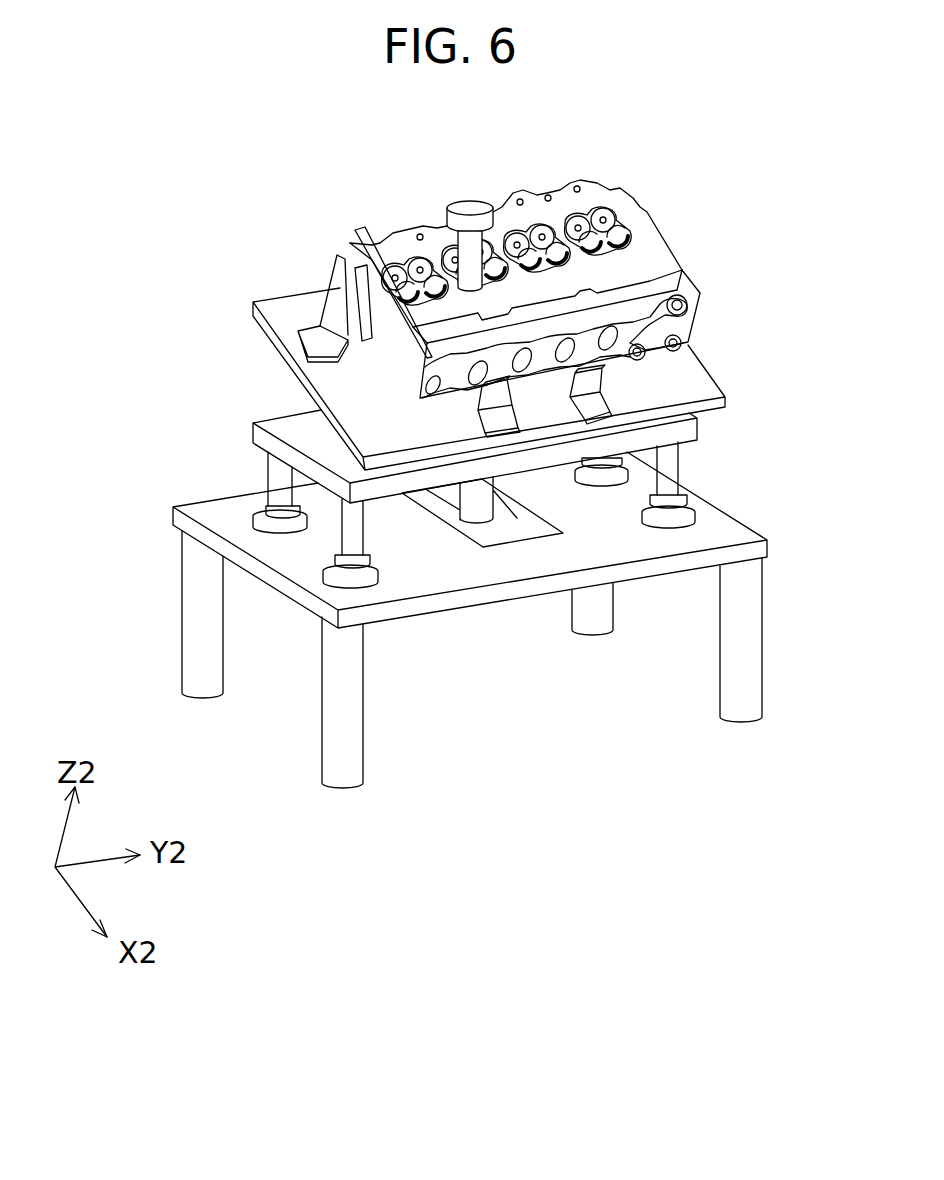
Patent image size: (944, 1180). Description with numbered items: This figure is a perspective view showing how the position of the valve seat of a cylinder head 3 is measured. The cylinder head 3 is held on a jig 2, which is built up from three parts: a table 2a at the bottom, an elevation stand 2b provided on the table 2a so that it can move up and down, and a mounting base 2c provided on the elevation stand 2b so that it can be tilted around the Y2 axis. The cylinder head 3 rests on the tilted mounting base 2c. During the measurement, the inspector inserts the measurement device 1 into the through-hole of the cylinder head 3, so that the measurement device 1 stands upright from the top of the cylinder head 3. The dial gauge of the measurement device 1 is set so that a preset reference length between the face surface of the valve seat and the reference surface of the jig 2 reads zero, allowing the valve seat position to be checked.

The measurement device 1 is at (468, 208).
The jig 2 is at (509, 507).
The table 2a is at (733, 525).
The elevation stand 2b is at (700, 431).
The mounting base 2c is at (287, 300).
The cylinder head 3 is at (655, 243).